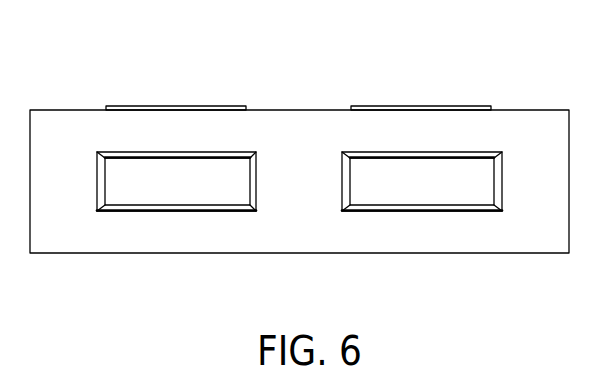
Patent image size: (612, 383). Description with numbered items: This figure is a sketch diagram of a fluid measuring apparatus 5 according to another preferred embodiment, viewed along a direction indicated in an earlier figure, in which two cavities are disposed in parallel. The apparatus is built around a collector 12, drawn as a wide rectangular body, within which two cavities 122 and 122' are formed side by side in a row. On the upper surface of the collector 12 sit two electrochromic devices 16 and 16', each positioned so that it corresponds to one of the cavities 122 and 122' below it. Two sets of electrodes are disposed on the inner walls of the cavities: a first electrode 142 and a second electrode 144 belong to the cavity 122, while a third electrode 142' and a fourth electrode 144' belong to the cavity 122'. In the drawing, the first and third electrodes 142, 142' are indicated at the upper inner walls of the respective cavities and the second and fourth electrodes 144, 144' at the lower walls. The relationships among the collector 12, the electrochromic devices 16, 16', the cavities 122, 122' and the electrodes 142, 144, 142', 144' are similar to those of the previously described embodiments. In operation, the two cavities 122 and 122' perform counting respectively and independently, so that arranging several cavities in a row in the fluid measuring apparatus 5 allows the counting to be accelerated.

The fluid measuring apparatus 5 is at (562, 87).
The collector 12 is at (320, 118).
The electrochromic device 16 is at (421, 73).
The electrochromic device 16' is at (176, 73).
The cavity 122 is at (407, 231).
The cavity 122' is at (150, 231).
The first electrode 142 is at (433, 232).
The third electrode 142' is at (197, 232).
The second electrode 144 is at (422, 260).
The fourth electrode 144' is at (176, 260).